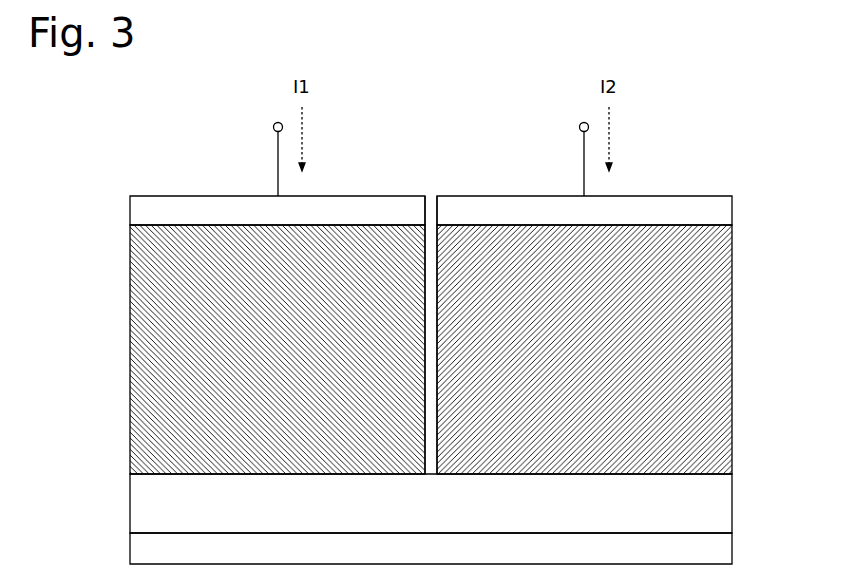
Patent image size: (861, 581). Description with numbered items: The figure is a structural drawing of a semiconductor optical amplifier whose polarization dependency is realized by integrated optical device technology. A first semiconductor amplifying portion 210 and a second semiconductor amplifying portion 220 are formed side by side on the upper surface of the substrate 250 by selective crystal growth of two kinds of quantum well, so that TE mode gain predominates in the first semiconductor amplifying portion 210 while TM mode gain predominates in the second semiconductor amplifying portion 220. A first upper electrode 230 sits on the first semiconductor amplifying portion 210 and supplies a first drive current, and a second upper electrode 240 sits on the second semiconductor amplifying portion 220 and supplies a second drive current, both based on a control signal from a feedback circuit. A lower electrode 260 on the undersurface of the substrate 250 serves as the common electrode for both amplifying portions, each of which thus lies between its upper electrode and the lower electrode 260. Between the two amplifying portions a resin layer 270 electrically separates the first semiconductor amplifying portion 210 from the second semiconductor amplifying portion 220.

The first semiconductor amplifying portion 210 is at (128, 344).
The second semiconductor amplifying portion 220 is at (734, 340).
The first upper electrode 230 is at (128, 212).
The second upper electrode 240 is at (734, 210).
The substrate 250 is at (734, 494).
The lower electrode 260 is at (734, 548).
The resin layer 270 is at (431, 204).